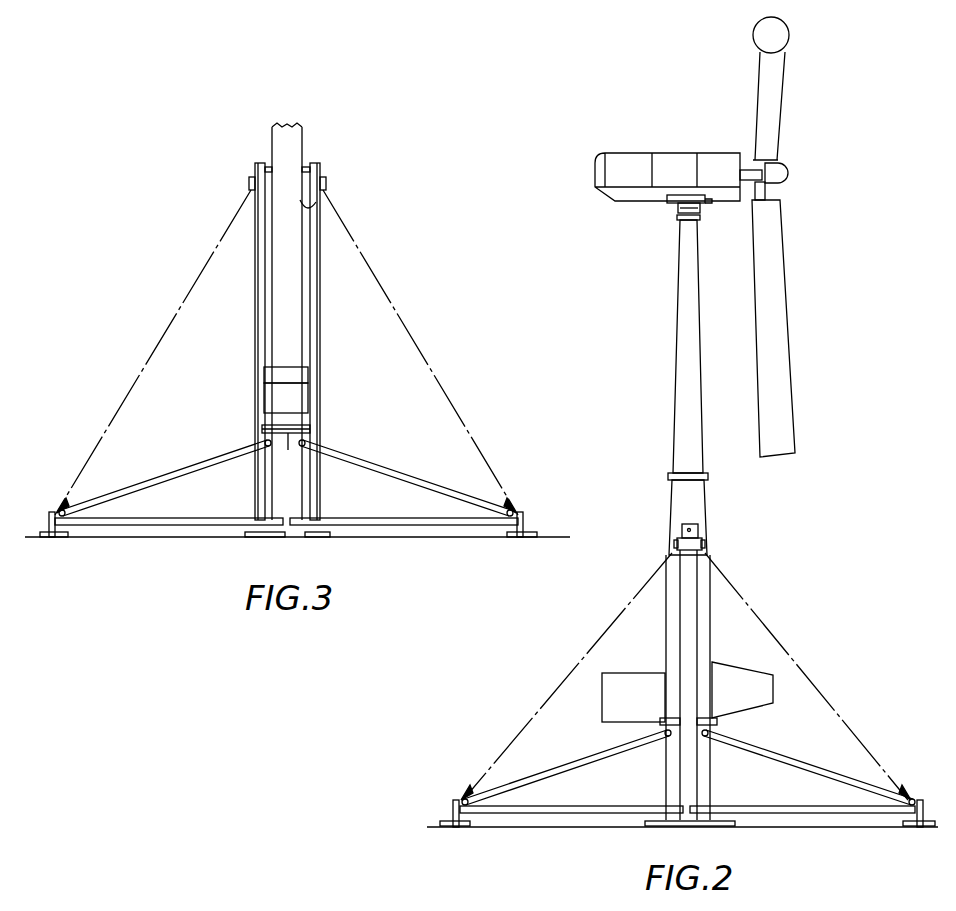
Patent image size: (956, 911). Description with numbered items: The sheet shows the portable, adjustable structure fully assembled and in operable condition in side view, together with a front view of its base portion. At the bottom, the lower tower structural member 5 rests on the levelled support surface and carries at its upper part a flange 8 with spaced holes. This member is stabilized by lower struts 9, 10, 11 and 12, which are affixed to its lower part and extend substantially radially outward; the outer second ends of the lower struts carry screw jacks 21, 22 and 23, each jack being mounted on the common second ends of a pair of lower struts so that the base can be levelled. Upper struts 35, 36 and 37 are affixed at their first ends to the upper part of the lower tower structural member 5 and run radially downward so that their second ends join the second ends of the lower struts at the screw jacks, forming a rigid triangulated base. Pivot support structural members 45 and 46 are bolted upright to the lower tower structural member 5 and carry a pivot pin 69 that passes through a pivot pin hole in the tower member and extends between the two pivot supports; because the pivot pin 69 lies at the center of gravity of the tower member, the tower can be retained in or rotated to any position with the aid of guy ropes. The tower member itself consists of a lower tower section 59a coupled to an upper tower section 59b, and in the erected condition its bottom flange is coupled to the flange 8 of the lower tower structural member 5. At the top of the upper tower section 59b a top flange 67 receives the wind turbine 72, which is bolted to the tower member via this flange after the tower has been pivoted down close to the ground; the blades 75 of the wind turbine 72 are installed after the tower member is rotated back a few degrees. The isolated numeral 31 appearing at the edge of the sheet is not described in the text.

In FIG. 2, the lower tower structural member 5 is at (663, 765).
In FIG. 3, the flange 8 is at (305, 432).
In FIG. 2, the flange 8 is at (718, 722).
In FIG. 2, the lower strut 9 is at (580, 813).
In FIG. 2, the lower strut 10 is at (793, 813).
In FIG. 3, the lower strut 11 is at (164, 526).
In FIG. 3, the lower strut 12 is at (395, 526).
In FIG. 2, the screw jack 21 is at (454, 800).
In FIG. 3, the screw jack 22 is at (50, 517).
In FIG. 2, the screw jack 22 is at (918, 800).
In FIG. 3, the screw jack 23 is at (526, 517).
In FIG. 3, the support member 31 is at (130, 898).
In FIG. 2, the upper strut 35 is at (570, 758).
In FIG. 3, the upper strut 36 is at (171, 470).
In FIG. 2, the upper strut 36 is at (777, 758).
In FIG. 3, the upper strut 37 is at (395, 470).
In FIG. 3, the pivot support structural member 45 is at (255, 305).
In FIG. 3, the pivot support structural member 46 is at (318, 305).
In FIG. 3, the lower tower section 59a is at (300, 200).
In FIG. 2, the lower tower section 59a is at (672, 516).
In FIG. 2, the upper tower section 59b is at (676, 402).
In FIG. 2, the top flange 67 is at (700, 220).
In FIG. 3, the pivot pin 69 is at (307, 170).
In FIG. 2, the wind turbine 72 is at (680, 155).
In FIG. 2, the blades 75 is at (786, 315).